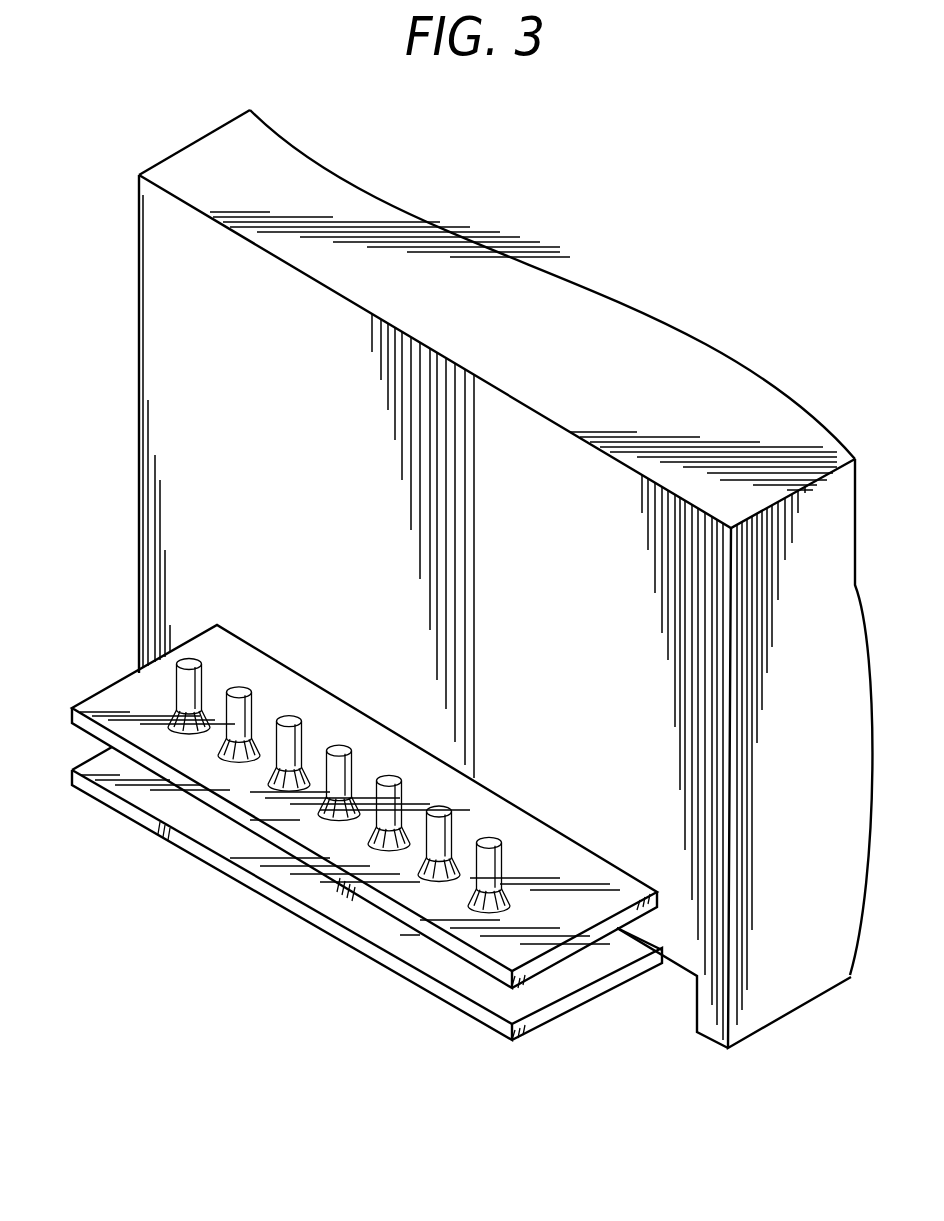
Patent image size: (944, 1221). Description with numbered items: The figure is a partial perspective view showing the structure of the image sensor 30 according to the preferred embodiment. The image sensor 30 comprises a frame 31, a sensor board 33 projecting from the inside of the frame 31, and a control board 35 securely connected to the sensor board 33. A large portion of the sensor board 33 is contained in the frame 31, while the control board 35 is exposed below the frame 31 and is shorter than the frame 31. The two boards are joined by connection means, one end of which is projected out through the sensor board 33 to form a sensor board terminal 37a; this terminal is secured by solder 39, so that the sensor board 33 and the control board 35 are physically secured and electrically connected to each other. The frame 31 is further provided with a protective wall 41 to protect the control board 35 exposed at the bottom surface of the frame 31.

The image sensor 30 is at (120, 532).
The frame 31 is at (176, 388).
The sensor board 33 is at (128, 695).
The control board 35 is at (131, 805).
The sensor board terminal 37a is at (204, 700).
The solder 39 is at (180, 735).
The protective wall 41 is at (712, 1023).